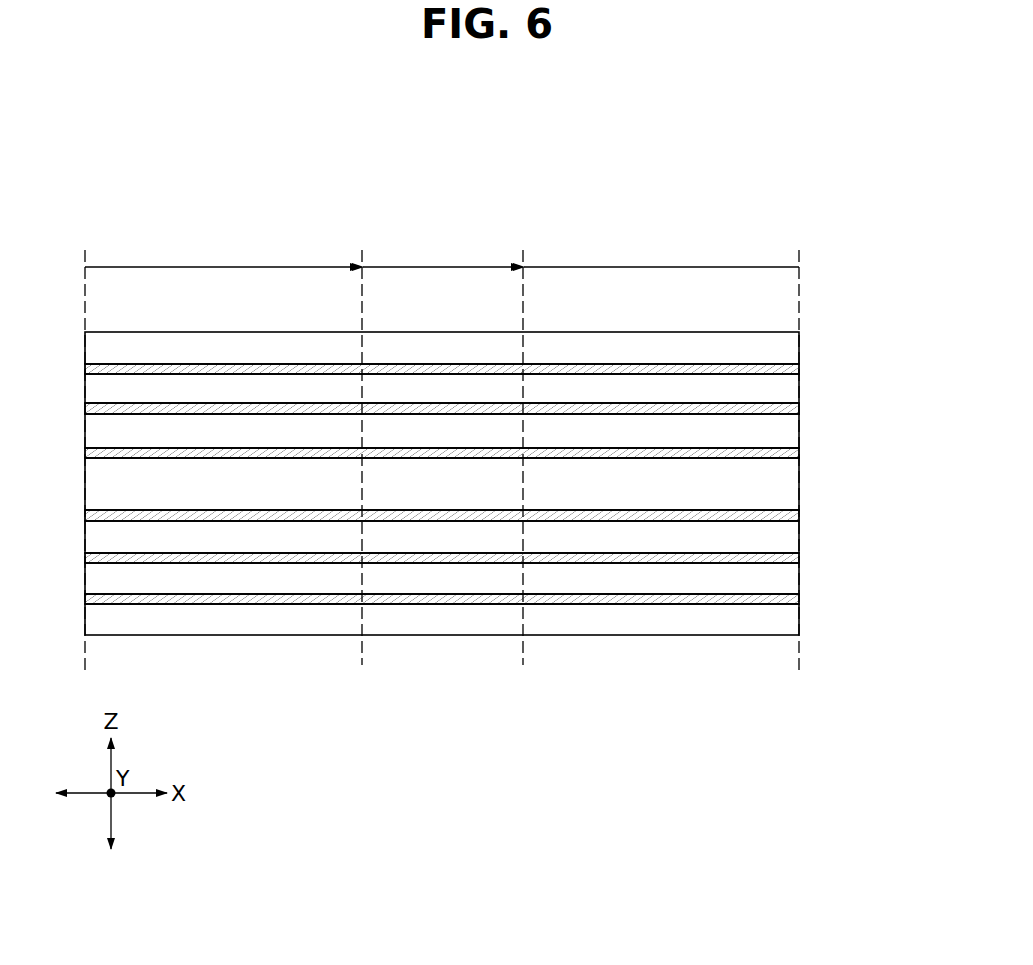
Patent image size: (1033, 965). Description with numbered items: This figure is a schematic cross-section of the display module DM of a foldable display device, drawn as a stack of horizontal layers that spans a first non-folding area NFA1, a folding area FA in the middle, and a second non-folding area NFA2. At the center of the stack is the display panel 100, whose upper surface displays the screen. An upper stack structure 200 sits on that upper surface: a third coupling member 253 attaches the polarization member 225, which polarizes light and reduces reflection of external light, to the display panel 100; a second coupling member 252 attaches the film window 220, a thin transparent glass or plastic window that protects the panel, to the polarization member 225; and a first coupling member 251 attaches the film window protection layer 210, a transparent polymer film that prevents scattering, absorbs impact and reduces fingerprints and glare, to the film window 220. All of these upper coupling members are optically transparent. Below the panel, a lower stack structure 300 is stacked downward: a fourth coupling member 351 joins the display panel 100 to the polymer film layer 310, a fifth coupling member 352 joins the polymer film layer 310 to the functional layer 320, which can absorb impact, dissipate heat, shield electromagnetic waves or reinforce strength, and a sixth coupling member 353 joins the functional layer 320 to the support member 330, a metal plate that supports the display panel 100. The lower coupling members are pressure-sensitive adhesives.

The display module DM is at (104, 168).
The first non-folding area NFA1 is at (223, 253).
The folding area FA is at (442, 253).
The second non-folding area NFA2 is at (661, 253).
The upper stack structure 200 is at (867, 325).
The film window protection layer 210 is at (790, 346).
The first coupling member 251 is at (790, 369).
The film window 220 is at (790, 388).
The second coupling member 252 is at (790, 410).
The polarization member 225 is at (790, 429).
The third coupling member 253 is at (790, 453).
The display panel 100 is at (790, 478).
The lower stack structure 300 is at (867, 506).
The fourth coupling member 351 is at (790, 514).
The polymer film layer 310 is at (790, 532).
The fifth coupling member 352 is at (790, 558).
The functional layer 320 is at (790, 578).
The sixth coupling member 353 is at (790, 600).
The support member 330 is at (790, 623).